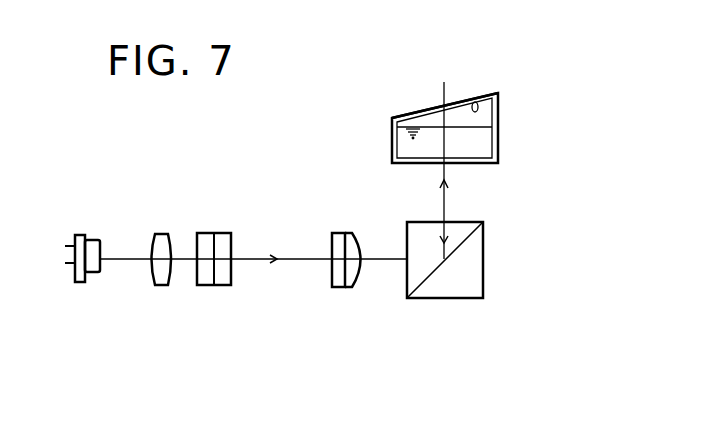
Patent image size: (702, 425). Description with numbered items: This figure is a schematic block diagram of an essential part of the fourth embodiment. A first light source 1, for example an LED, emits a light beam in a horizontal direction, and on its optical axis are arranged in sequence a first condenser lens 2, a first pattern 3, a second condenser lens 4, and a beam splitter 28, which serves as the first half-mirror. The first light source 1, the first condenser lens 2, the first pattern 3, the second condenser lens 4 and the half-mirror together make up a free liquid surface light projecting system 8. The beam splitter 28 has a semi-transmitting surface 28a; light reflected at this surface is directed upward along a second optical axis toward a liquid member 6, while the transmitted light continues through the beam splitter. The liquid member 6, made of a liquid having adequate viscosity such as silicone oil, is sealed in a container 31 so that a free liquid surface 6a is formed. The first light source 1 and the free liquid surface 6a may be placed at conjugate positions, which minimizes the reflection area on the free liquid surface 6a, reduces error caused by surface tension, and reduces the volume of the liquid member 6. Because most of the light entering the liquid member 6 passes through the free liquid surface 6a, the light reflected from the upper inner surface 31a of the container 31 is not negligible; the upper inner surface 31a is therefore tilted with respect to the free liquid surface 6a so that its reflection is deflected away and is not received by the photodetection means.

The first light source 1 is at (93, 238).
The first condenser lens 2 is at (163, 232).
The first pattern 3 is at (207, 233).
The second condenser lens 4 is at (340, 233).
The liquid member 6 is at (482, 145).
The free liquid surface 6a is at (460, 125).
The free liquid surface light projecting system 8 is at (358, 330).
The beam splitter 28 is at (483, 273).
The semi-transmitting surface 28a is at (468, 238).
The container 31 is at (425, 112).
The upper inner surface 31a is at (482, 100).